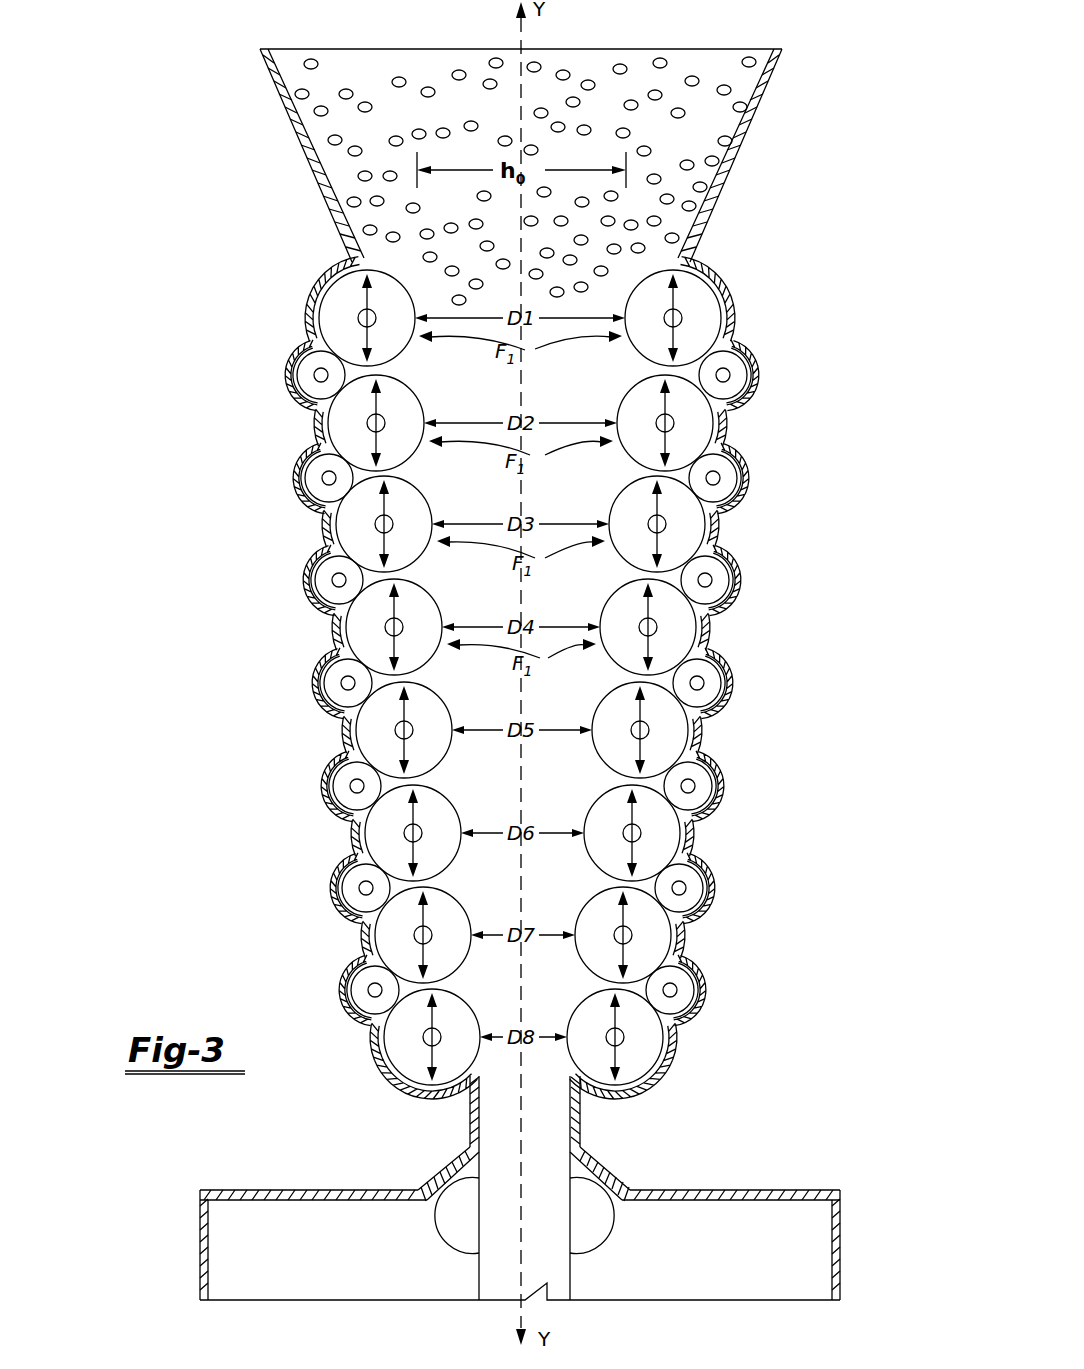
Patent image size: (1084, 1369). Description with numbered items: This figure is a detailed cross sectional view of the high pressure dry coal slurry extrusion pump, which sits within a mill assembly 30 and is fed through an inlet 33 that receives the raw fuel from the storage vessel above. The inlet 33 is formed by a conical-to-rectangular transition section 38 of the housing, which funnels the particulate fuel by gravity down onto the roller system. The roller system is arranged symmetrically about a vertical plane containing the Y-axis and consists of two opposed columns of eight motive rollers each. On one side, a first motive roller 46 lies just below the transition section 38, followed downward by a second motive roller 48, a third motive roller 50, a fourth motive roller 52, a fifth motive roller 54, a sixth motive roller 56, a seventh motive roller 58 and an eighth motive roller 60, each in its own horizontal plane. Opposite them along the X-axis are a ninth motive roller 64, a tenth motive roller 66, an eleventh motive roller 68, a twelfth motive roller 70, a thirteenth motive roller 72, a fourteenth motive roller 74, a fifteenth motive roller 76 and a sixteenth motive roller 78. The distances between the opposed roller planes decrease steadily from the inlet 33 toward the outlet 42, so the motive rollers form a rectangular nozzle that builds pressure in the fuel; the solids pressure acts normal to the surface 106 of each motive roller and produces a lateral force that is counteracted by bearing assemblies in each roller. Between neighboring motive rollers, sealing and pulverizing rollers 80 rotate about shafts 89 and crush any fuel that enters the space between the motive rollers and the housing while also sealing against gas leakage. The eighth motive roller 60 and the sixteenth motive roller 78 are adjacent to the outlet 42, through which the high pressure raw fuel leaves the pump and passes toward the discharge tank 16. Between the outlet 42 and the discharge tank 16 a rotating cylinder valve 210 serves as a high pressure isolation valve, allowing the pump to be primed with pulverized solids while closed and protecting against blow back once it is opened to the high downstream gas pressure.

The discharge tank 16 is at (856, 1216).
The mill assembly 30 is at (581, 36).
The inlet 33 is at (665, 70).
The conical-to-rectangular transition section 38 is at (318, 183).
The outlet 42 is at (540, 1134).
The first motive roller 46 is at (333, 313).
The second motive roller 48 is at (345, 433).
The third motive roller 50 is at (352, 536).
The fourth motive roller 52 is at (360, 641).
The fifth motive roller 54 is at (371, 754).
The sixth motive roller 56 is at (380, 851).
The seventh motive roller 58 is at (390, 950).
The eighth motive roller 60 is at (397, 1056).
The ninth motive roller 64 is at (705, 296).
The tenth motive roller 66 is at (705, 415).
The eleventh motive roller 68 is at (690, 525).
The twelfth motive roller 70 is at (690, 628).
The thirteenth motive roller 72 is at (680, 729).
The fourteenth motive roller 74 is at (670, 840).
The fifteenth motive roller 76 is at (660, 935).
The sixteenth motive roller 78 is at (648, 1038).
The sealing and pulverizing rollers 80 is at (305, 372).
The shaft 89 is at (341, 683).
The surface 106 is at (425, 364).
The rotating cylinder valve 210 is at (440, 1202).